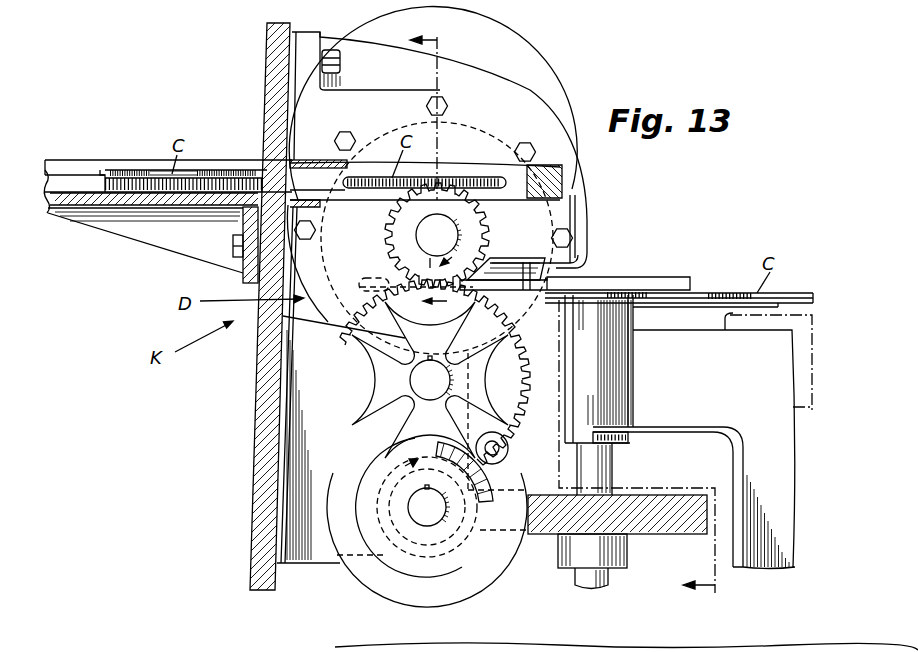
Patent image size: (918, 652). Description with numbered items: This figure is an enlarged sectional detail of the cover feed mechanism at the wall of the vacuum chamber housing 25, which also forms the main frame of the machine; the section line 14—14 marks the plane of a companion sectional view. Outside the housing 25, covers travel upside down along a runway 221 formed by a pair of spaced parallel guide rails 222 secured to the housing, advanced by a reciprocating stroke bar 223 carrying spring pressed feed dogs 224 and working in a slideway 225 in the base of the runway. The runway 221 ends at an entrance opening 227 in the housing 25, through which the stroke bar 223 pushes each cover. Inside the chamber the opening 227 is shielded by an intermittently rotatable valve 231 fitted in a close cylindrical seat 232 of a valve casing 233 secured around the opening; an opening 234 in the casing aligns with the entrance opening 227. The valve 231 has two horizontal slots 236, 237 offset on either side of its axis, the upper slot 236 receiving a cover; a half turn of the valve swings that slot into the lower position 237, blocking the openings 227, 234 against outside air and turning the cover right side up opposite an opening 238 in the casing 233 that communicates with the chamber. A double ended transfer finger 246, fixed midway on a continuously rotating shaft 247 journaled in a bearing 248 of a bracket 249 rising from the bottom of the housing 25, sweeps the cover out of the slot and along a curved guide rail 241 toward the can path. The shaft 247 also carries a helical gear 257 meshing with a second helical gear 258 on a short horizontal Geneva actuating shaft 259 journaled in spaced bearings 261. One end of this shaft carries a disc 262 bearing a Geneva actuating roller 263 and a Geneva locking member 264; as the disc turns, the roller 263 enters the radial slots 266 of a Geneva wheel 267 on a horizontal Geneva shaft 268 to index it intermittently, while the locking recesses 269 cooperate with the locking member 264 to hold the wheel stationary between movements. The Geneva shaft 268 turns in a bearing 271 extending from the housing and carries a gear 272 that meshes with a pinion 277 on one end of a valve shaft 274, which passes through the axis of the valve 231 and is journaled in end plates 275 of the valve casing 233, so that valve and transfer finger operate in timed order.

The section line 14- 14 is at (611, 314).
The housing 25 is at (263, 372).
The runway 221 is at (130, 176).
The guide rails 222 is at (200, 165).
The stroke bar 223 is at (78, 180).
The feed dogs 224 is at (101, 172).
The slideway 225 is at (56, 218).
The entrance opening 227 is at (273, 165).
The valve 231 is at (527, 192).
The cylindrical seat 232 is at (548, 185).
The valve casing 233 is at (548, 162).
The opening 234 is at (301, 162).
The upper slot 236 is at (500, 170).
The lower slot 237 is at (503, 276).
The opening 238 is at (650, 282).
The curved guide rail 241 is at (664, 276).
The transfer finger 246 is at (705, 294).
The shaft 247 is at (602, 466).
The bearing 248 is at (613, 353).
The bracket 249 is at (785, 474).
The helical gear 257 is at (665, 527).
The second helical gear 258 is at (458, 558).
The Geneva actuating shaft 259 is at (417, 507).
The bearings 261 is at (470, 568).
The disc 262 is at (388, 593).
The Geneva actuating roller 263 is at (501, 456).
The Geneva locking member 264 is at (390, 557).
The radial slots 266 is at (368, 408).
The Geneva wheel 267 is at (410, 433).
The Geneva shaft 268 is at (418, 372).
The Geneva wheel lobes 269 is at (366, 380).
The bearing 271 is at (435, 385).
The gear 272 is at (502, 440).
The valve shaft 274 is at (439, 241).
The end plates 275 is at (455, 130).
The pinion 277 is at (424, 243).